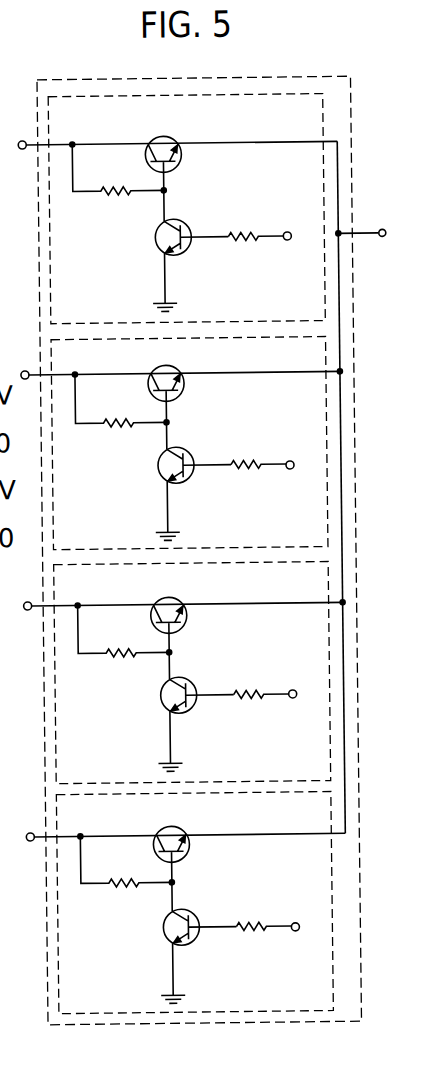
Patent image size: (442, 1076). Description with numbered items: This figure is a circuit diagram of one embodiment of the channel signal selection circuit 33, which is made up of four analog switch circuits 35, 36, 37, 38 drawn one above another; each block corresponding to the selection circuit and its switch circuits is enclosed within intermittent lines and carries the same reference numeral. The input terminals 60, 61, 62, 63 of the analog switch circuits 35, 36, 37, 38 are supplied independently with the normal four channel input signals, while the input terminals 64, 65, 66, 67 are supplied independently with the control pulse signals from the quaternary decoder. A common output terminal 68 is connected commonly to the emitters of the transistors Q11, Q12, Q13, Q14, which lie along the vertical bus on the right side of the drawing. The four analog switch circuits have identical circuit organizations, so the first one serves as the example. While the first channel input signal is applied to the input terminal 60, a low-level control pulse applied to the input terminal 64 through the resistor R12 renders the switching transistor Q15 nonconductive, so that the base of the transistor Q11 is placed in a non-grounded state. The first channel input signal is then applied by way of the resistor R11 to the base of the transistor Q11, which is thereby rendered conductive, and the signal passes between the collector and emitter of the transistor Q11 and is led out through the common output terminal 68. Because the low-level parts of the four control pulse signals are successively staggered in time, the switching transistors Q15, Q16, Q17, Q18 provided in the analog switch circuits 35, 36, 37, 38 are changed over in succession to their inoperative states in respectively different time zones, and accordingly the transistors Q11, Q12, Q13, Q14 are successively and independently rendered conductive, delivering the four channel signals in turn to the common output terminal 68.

The channel signal selection circuit 33 is at (173, 78).
The analog switch circuit 35 is at (244, 90).
The analog switch circuit 36 is at (331, 465).
The analog switch circuit 37 is at (333, 694).
The analog switch circuit 38 is at (331, 912).
The input terminal 60 is at (23, 141).
The input terminal 61 is at (23, 371).
The input terminal 62 is at (23, 601).
The input terminal 63 is at (23, 831).
The input terminal 64 is at (289, 234).
The input terminal 65 is at (290, 462).
The input terminal 66 is at (289, 691).
The input terminal 67 is at (289, 924).
The common output terminal 68 is at (384, 232).
The transistor Q11 is at (173, 115).
The transistor Q12 is at (179, 353).
The transistor Q13 is at (186, 585).
The transistor Q14 is at (184, 813).
The switching transistor Q15 is at (173, 218).
The switching transistor Q16 is at (189, 440).
The switching transistor Q17 is at (198, 670).
The switching transistor Q18 is at (196, 900).
The resistor R11 is at (119, 169).
The resistor R12 is at (256, 255).